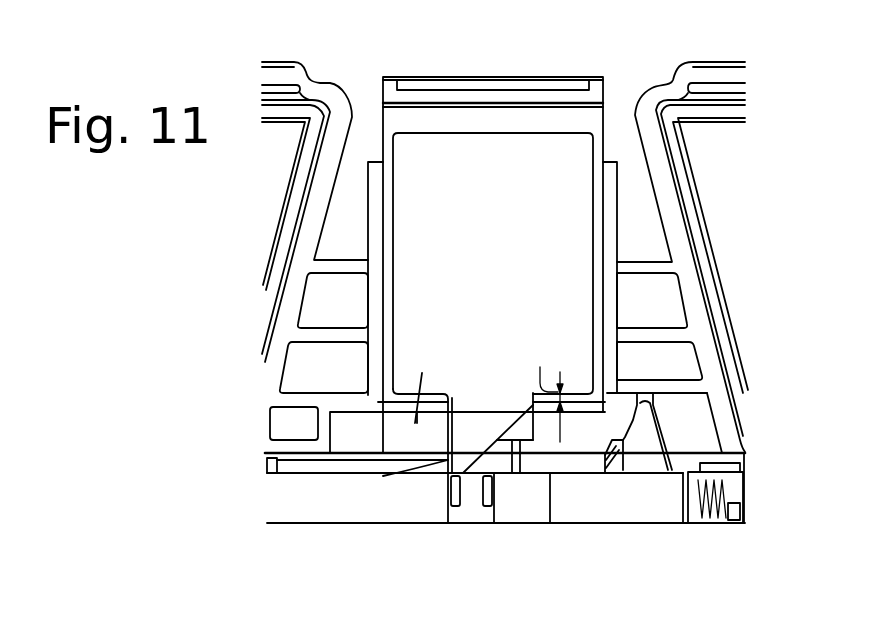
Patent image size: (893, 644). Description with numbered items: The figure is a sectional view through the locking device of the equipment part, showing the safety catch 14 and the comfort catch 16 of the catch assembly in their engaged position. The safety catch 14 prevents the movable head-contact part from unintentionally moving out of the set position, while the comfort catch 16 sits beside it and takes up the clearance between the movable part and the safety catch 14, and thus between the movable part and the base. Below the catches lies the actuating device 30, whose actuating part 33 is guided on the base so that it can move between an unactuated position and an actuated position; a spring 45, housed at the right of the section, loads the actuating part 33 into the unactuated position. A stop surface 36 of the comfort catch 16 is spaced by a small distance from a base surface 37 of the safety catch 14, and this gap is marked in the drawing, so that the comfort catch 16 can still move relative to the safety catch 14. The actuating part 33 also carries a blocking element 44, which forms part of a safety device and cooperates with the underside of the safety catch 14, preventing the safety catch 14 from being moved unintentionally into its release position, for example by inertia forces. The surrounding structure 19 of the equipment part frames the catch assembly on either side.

The safety catch 14 is at (388, 405).
The comfort catch 16 is at (519, 160).
The side beam 19 is at (720, 133).
The actuating device 30 is at (430, 527).
The actuating part 33 is at (343, 497).
The stop surface 36 is at (407, 393).
The base surface 37 is at (417, 423).
The blocking element 44 is at (638, 455).
The spring 45 is at (707, 524).